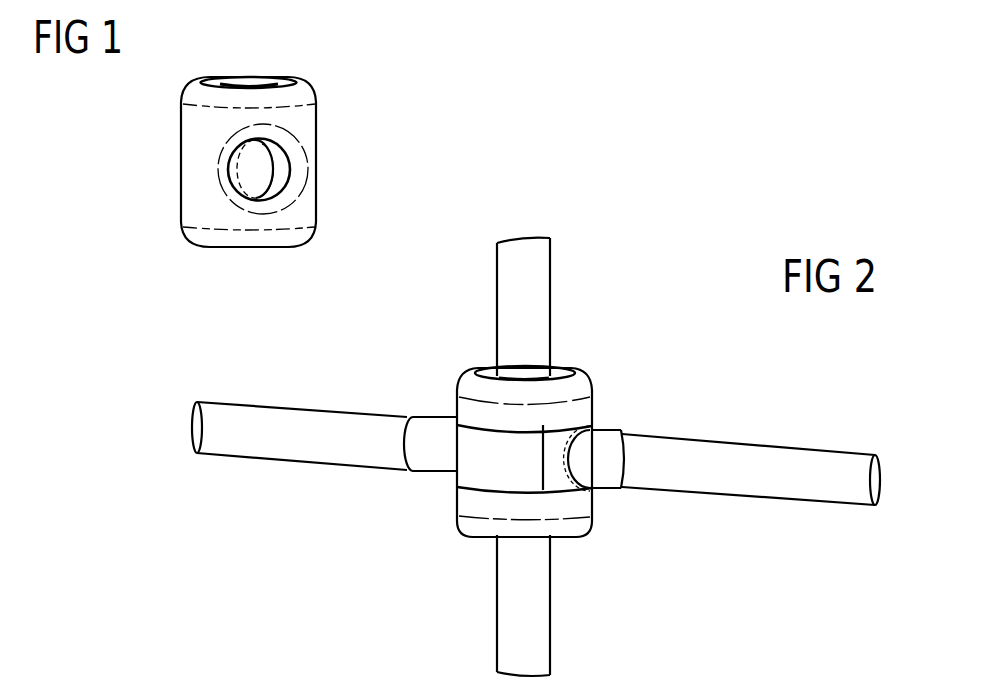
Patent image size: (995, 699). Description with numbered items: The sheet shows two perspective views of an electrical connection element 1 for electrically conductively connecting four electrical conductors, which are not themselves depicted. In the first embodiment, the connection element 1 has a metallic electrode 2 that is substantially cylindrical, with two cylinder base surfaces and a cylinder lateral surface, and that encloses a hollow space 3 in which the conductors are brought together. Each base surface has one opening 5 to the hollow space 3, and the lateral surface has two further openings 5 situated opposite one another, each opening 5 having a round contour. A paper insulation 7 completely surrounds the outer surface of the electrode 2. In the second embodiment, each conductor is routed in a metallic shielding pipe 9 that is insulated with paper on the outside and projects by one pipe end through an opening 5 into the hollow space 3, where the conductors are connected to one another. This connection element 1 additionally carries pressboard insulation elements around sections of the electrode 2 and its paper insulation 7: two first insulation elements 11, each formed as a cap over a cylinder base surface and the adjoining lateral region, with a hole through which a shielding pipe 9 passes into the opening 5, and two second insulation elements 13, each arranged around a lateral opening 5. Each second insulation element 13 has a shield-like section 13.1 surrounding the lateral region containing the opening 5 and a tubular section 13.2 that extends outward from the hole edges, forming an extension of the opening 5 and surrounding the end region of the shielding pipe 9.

In FIG. 1, the electrical connection element 1 is at (330, 91).
In FIG. 2, the electrical connection element 1 is at (580, 346).
In FIG. 1, the metallic electrode 2 is at (283, 190).
In FIG. 1, the hollow space 3 is at (276, 171).
In FIG. 1, the opening 5 is at (248, 77).
In FIG. 1, the paper insulation 7 is at (200, 200).
In FIG. 2, the paper insulation 7 is at (501, 476).
In FIG. 2, the shielding pipe 9 is at (797, 488).
In FIG. 2, the first insulation element 11 is at (468, 383).
In FIG. 2, the second insulation element 13 is at (436, 482).
In FIG. 2, the shield-like section 13.1 is at (557, 480).
In FIG. 2, the tubular section 13.2 is at (428, 428).